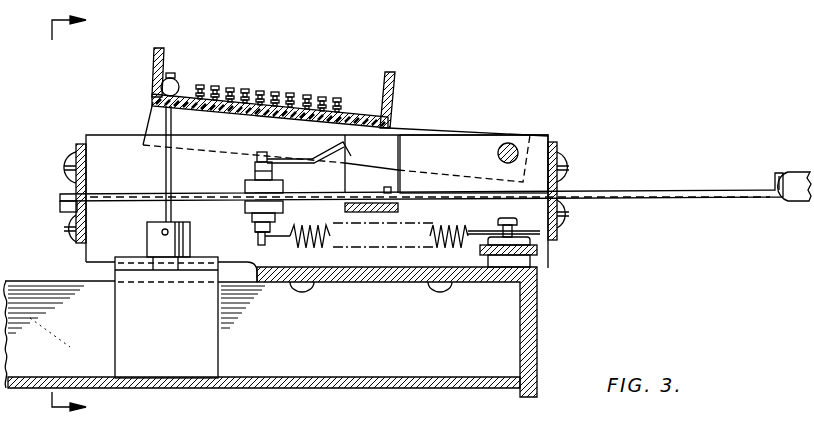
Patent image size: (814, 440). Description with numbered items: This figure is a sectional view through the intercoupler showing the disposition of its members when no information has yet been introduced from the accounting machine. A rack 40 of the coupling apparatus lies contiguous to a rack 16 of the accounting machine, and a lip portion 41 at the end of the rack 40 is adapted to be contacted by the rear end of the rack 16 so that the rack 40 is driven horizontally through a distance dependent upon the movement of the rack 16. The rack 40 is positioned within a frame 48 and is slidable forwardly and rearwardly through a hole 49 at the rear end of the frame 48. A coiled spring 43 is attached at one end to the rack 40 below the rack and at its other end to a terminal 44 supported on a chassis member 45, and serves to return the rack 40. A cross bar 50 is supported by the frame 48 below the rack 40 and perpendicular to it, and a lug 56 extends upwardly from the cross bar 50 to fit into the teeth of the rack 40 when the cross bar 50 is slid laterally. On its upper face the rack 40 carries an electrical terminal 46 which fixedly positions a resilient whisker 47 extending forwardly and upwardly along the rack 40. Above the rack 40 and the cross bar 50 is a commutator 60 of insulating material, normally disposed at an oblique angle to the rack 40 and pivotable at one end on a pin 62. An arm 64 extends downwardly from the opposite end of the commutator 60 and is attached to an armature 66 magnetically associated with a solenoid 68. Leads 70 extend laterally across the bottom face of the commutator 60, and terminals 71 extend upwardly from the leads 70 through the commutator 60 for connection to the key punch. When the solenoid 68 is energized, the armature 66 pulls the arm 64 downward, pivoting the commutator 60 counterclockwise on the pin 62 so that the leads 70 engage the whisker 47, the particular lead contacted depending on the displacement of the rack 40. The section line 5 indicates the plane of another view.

The section line 5- 5 is at (53, 223).
The rack 16 is at (793, 201).
The rack 40 is at (693, 198).
The lip portion 41 is at (776, 180).
The coiled spring 43 is at (449, 229).
The terminal 44 is at (532, 241).
The chassis member 45 is at (540, 330).
The electrical terminal 46 is at (250, 173).
The resilient whisker 47 is at (279, 161).
The frame 48 is at (556, 142).
The hole 49 is at (92, 200).
The cross bar 50 is at (398, 208).
The lug 56 is at (385, 188).
The commutator 60 is at (398, 109).
The pin 62 is at (497, 152).
The arm 64 is at (165, 168).
The armature 66 is at (190, 240).
The solenoid 68 is at (208, 337).
The lead 70 is at (203, 108).
The terminal 71 is at (261, 95).